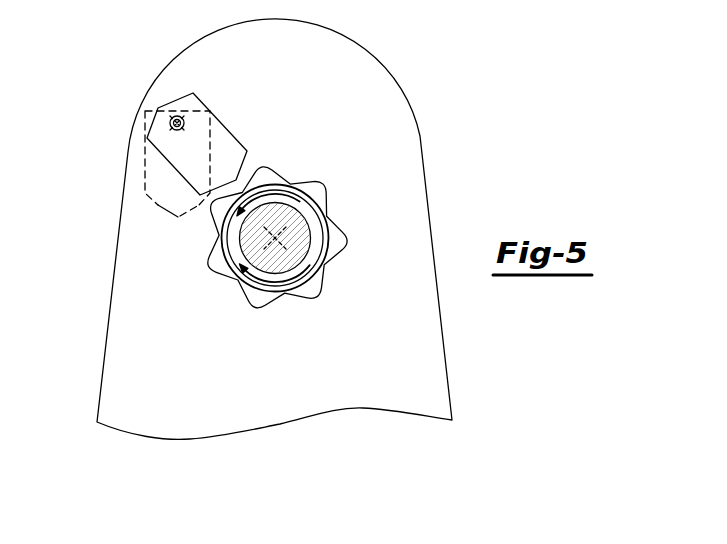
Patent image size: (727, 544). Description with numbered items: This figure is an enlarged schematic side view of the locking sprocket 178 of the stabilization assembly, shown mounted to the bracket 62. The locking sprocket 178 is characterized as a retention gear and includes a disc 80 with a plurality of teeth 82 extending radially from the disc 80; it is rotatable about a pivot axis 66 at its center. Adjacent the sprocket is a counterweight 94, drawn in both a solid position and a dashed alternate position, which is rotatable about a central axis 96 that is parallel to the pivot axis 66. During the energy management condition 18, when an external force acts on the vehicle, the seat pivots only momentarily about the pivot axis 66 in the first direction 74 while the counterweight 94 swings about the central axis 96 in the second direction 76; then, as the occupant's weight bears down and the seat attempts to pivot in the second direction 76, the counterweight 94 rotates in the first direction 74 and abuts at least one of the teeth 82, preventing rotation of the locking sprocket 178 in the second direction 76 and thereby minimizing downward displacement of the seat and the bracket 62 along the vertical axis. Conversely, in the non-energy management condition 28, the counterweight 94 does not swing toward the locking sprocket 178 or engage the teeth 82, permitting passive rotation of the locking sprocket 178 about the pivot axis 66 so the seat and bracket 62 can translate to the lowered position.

The energy management condition 18 is at (232, 124).
The non-energy management condition 28 is at (156, 208).
The bracket 62 is at (373, 75).
The pivot axis 66 is at (277, 246).
The first direction 74 is at (289, 180).
The second direction 76 is at (263, 286).
The disc 80 is at (324, 252).
The teeth 82 is at (324, 177).
The counterweight 94 is at (233, 152).
The central axis 96 is at (177, 115).
The locking sprocket 178 is at (351, 303).